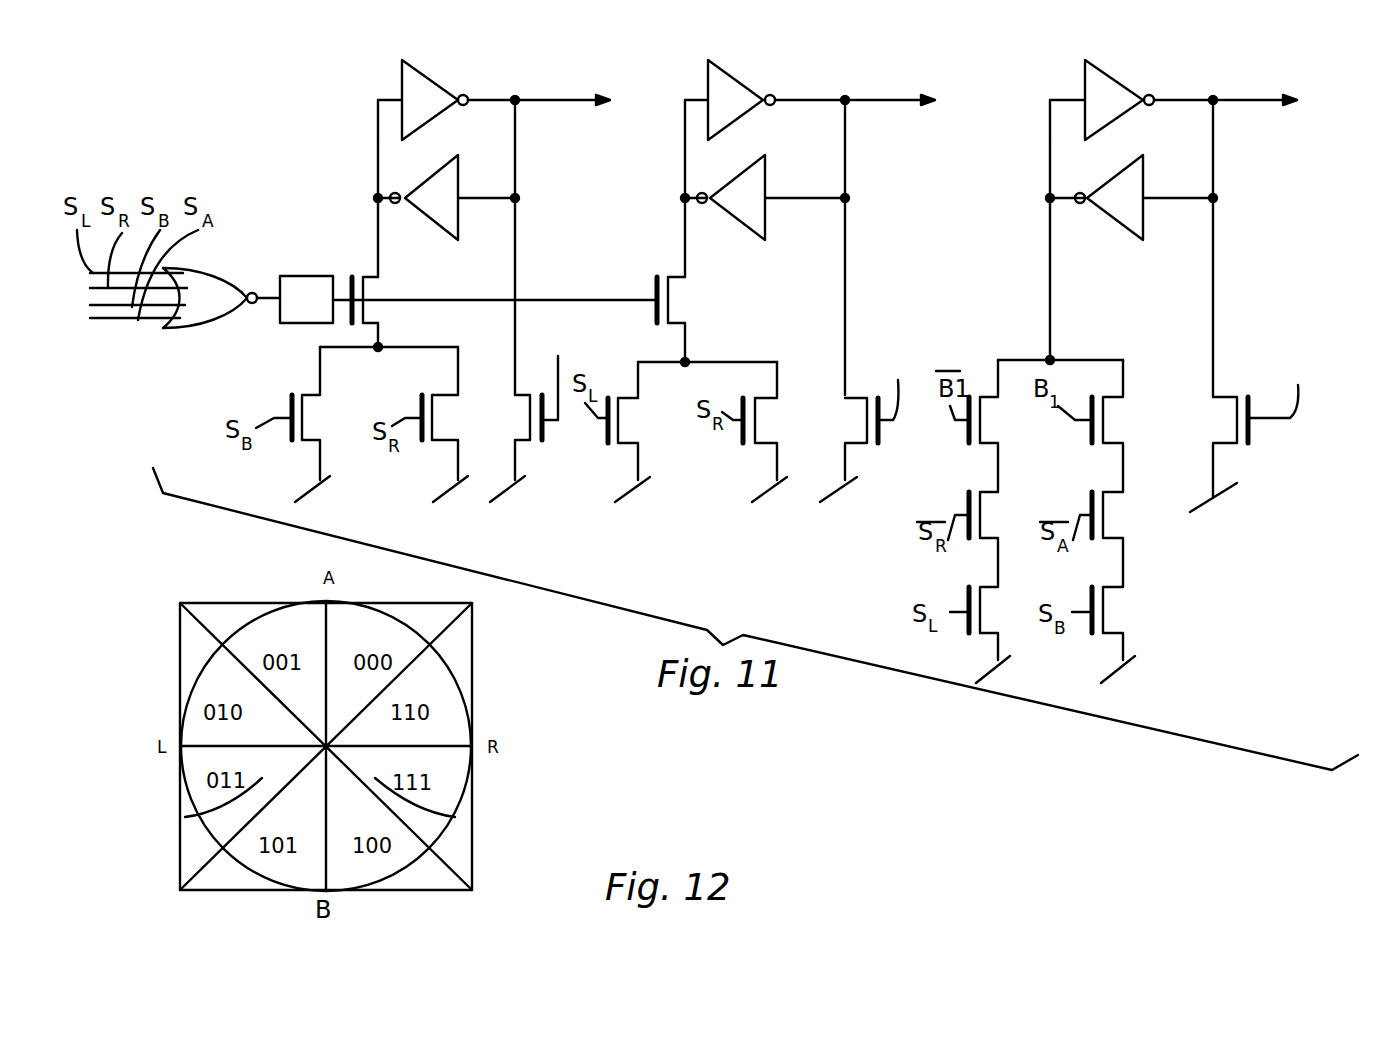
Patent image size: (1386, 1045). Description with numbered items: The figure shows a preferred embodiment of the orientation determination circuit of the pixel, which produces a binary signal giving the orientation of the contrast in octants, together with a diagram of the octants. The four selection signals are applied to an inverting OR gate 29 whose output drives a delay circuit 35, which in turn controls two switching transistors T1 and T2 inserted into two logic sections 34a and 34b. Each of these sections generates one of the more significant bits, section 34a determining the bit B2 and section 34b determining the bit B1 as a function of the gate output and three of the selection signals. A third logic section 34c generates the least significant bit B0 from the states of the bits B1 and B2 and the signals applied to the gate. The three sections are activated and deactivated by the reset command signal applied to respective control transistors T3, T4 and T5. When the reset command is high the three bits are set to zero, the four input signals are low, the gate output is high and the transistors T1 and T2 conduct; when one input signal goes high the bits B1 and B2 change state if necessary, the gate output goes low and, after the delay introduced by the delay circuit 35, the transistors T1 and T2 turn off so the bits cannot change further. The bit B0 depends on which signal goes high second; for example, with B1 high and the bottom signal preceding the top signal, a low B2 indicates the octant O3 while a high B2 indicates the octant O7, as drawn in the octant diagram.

In FIG. 11, the inverting OR gate 29 is at (205, 310).
In FIG. 11, the delay circuit 35 is at (293, 280).
In FIG. 11, the logic section 34a is at (550, 162).
In FIG. 11, the logic section 34b is at (877, 163).
In FIG. 11, the third logic circuit 34c is at (1250, 158).
In FIG. 11, the switching transistor T1 is at (382, 285).
In FIG. 11, the switching transistor T2 is at (705, 302).
In FIG. 11, the control transistor T3 is at (555, 432).
In FIG. 11, the control transistor T4 is at (897, 434).
In FIG. 11, the control transistor T5 is at (1292, 434).
In FIG. 11, the bit B2 is at (535, 98).
In FIG. 11, the bit B1 is at (865, 98).
In FIG. 11, the least significant bit B0 is at (1232, 98).
In FIG. 12, the octant O3 is at (185, 817).
In FIG. 12, the octant O7 is at (455, 820).